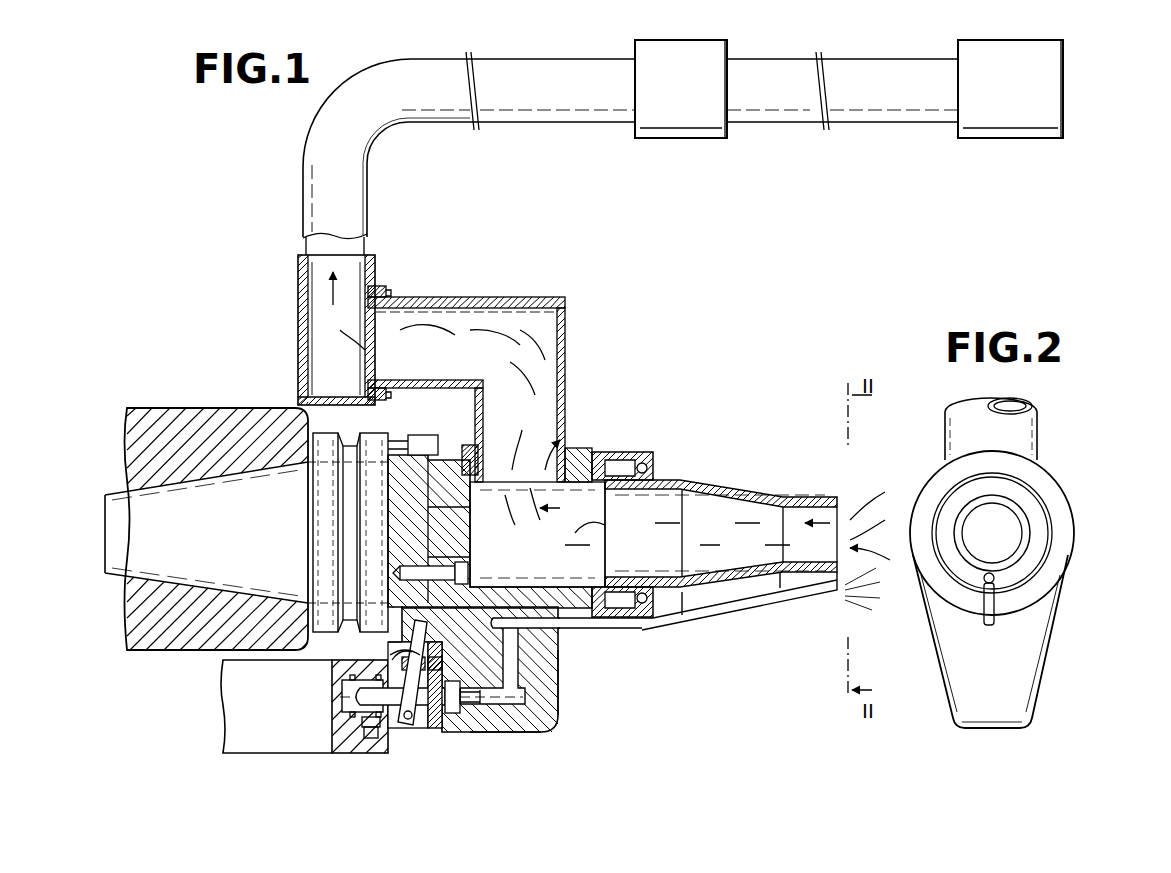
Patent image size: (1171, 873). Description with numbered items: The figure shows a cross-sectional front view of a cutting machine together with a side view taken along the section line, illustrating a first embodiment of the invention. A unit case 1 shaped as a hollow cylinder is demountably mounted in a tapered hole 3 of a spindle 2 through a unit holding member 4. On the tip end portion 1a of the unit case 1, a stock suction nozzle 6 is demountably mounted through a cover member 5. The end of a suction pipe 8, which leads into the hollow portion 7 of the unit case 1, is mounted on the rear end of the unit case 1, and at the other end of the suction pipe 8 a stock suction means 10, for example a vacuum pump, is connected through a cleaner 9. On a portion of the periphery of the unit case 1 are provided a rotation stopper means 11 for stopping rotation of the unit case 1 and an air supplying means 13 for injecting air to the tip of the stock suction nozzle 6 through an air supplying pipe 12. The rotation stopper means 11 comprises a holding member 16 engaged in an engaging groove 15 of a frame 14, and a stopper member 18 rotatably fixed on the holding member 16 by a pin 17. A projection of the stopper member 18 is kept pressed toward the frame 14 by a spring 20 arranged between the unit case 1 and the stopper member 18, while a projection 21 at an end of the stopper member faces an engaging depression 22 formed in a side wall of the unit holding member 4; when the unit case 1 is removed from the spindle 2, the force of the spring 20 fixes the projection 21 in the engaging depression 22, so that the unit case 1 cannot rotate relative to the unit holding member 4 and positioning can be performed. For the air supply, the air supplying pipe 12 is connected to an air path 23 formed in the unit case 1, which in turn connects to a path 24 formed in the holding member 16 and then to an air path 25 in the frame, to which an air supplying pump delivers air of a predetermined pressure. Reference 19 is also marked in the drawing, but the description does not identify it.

In FIG. 1, the unit case 1 is at (572, 600).
In FIG. 2, the unit case 1 is at (1062, 650).
In FIG. 1, the tip end portion 1a is at (612, 472).
In FIG. 1, the spindle 2 is at (228, 428).
In FIG. 1, the tapered hole 3 is at (135, 645).
In FIG. 1, the unit holding member 4 is at (352, 455).
In FIG. 1, the cover member 5 is at (645, 452).
In FIG. 2, the cover member 5 is at (1060, 500).
In FIG. 1, the stock suction nozzle 6 is at (718, 482).
In FIG. 2, the stock suction nozzle 6 is at (1028, 538).
In FIG. 1, the hollow portion 7 is at (620, 617).
In FIG. 1, the suction pipe 8 is at (565, 343).
In FIG. 2, the suction pipe 8 is at (1032, 432).
In FIG. 1, the cleaner 9 is at (676, 138).
In FIG. 1, the stock suction means 10 is at (1002, 138).
In FIG. 1, the rotation stopper means 11 is at (427, 732).
In FIG. 1, the air supplying pipe 12 is at (690, 620).
In FIG. 2, the air supplying pipe 12 is at (1000, 578).
In FIG. 1, the air supplying means 13 is at (490, 712).
In FIG. 1, the frame 14 is at (280, 740).
In FIG. 1, the engaging groove 15 is at (335, 712).
In FIG. 1, the holding member 16 is at (405, 727).
In FIG. 1, the pin 17 is at (436, 732).
In FIG. 1, the stopper member 18 is at (462, 725).
In FIG. 1, the cavity 19 is at (420, 665).
In FIG. 1, the spring 20 is at (540, 732).
In FIG. 1, the projection 21 is at (560, 690).
In FIG. 1, the engaging depression 22 is at (410, 637).
In FIG. 1, the air path 23 is at (537, 626).
In FIG. 1, the path 24 is at (393, 740).
In FIG. 1, the air path 25 is at (362, 757).